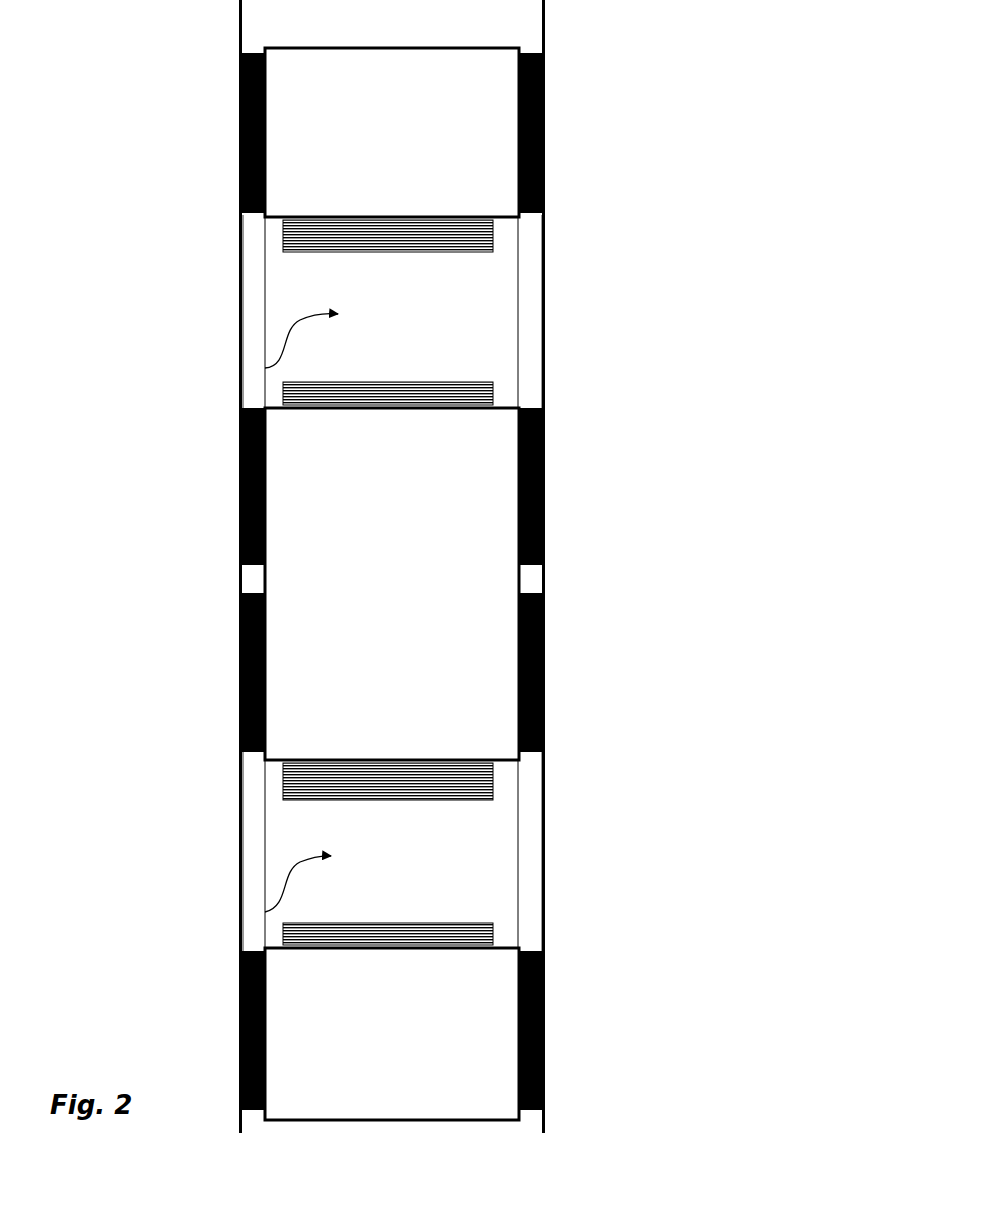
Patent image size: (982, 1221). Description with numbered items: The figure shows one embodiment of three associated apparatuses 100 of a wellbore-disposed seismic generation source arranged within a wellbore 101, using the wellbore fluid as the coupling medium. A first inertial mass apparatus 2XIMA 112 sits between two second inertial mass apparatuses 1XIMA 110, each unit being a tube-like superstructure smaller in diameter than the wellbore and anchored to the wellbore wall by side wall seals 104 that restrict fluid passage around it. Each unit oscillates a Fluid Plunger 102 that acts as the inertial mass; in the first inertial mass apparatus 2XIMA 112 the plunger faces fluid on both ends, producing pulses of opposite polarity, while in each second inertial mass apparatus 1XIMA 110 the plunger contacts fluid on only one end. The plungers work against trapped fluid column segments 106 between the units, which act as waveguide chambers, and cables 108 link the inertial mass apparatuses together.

The associated apparatuses 100 is at (298, 566).
The outer housing 101 is at (545, 25).
The fluid plunger 102 is at (388, 252).
The side wall seals 104 is at (241, 135).
The fluid column segments 106 is at (265, 368).
The cables 108 is at (265, 314).
The second inertial mass apparatus 1XIMA 110 is at (392, 584).
The first inertial mass apparatus 2XIMA 112 is at (392, 584).